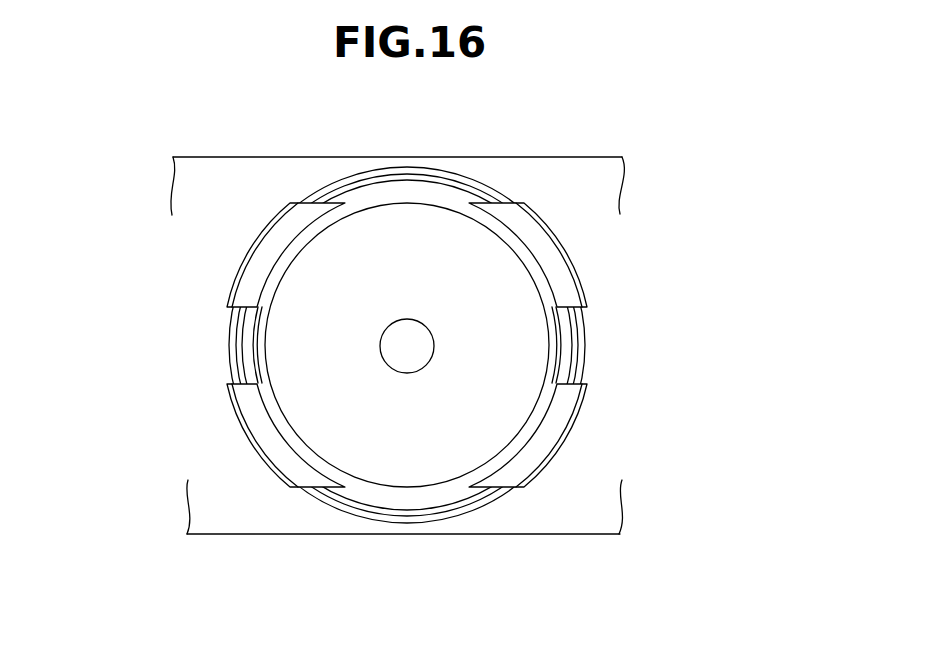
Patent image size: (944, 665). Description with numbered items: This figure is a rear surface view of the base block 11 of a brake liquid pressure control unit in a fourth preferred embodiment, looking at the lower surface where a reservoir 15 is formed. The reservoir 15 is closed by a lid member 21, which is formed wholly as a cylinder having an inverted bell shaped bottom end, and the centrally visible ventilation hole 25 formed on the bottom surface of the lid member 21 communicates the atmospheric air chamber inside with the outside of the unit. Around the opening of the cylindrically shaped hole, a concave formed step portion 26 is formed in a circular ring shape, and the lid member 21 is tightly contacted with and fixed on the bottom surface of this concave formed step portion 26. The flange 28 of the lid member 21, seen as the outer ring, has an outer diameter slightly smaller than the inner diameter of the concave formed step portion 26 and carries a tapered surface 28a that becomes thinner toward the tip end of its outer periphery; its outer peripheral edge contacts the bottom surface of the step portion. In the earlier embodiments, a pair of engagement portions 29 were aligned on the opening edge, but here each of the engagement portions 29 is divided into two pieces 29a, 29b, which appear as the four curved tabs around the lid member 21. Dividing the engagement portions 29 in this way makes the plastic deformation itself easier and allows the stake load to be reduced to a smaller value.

The base block 11 is at (567, 182).
The reservoir 15 is at (407, 391).
The lid member 21 is at (410, 228).
The ventilation hole 25 is at (417, 320).
The concave formed step portion 26 is at (378, 503).
The flange 28 is at (407, 391).
The tapered surface 28a is at (407, 345).
The engagement portions 29 is at (407, 345).
The engagement portion piece 29a is at (565, 293).
The engagement portion piece 29b is at (253, 282).